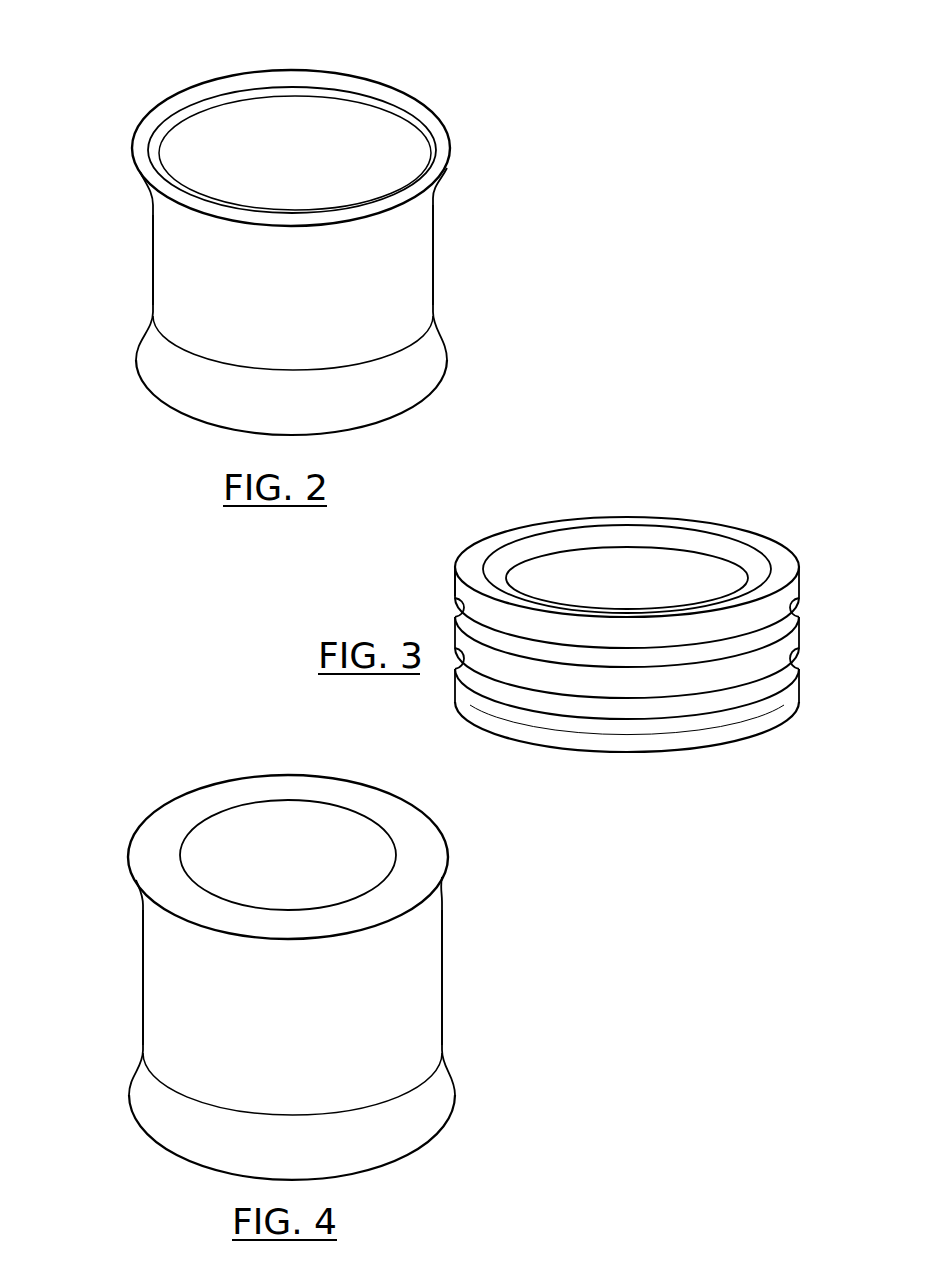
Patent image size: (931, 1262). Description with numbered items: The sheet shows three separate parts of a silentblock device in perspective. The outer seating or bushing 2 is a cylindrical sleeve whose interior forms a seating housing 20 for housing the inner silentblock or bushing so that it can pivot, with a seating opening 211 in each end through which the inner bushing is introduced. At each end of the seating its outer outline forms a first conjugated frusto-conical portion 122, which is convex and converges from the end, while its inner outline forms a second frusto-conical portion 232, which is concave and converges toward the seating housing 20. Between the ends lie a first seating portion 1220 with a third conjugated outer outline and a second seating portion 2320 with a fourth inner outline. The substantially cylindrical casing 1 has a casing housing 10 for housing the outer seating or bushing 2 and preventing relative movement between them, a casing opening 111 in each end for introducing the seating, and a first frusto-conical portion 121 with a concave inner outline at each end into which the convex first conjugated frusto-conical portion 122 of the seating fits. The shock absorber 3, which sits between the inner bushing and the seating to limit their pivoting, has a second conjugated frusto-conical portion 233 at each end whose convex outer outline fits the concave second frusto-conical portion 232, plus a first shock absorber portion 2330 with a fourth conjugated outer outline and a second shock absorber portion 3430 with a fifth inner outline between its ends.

In FIG. 3, the casing 1 is at (803, 542).
In FIG. 3, the casing housing 10 is at (650, 592).
In FIG. 3, the casing opening 111 is at (652, 508).
In FIG. 3, the first frusto-conical portion 121 is at (690, 543).
In FIG. 2, the outer seating or bushing 2 is at (452, 240).
In FIG. 2, the seating housing 20 is at (300, 163).
In FIG. 2, the seating opening 211 is at (383, 73).
In FIG. 2, the second frusto-conical portion 232 is at (212, 93).
In FIG. 2, the second seating portion 2320 is at (337, 173).
In FIG. 2, the first conjugated frusto-conical portion 122 is at (142, 333).
In FIG. 2, the first seating portion 1220 is at (433, 275).
In FIG. 4, the shock absorber 3 is at (475, 1003).
In FIG. 4, the second conjugated frusto-conical portion 233 is at (135, 1070).
In FIG. 4, the first shock absorber portion 2330 is at (442, 955).
In FIG. 4, the second shock absorber portion 3430 is at (252, 830).